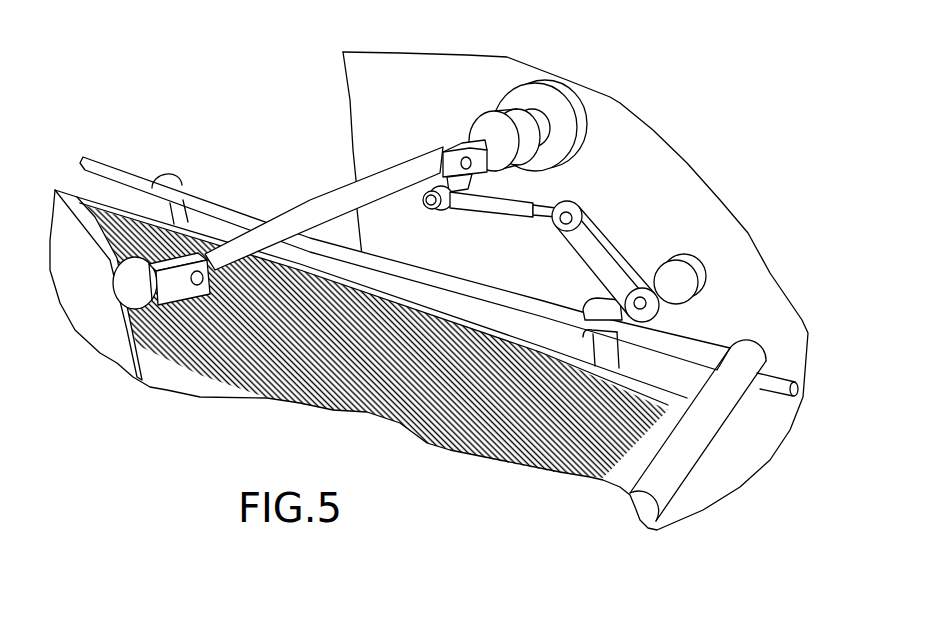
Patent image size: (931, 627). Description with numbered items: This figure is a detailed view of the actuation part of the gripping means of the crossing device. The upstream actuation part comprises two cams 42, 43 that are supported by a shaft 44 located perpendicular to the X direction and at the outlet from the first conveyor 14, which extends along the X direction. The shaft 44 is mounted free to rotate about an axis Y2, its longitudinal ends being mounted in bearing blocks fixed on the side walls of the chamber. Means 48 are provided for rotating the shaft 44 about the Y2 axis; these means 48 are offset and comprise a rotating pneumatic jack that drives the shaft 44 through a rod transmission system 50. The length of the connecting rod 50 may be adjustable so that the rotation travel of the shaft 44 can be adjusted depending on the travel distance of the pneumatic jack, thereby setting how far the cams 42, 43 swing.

The first conveyor 14 is at (323, 372).
The cam 42 is at (181, 292).
The cam 43 is at (457, 145).
The shaft 44 is at (330, 206).
The means for rotating the shaft 48 is at (642, 223).
The connecting rod 50 is at (517, 197).